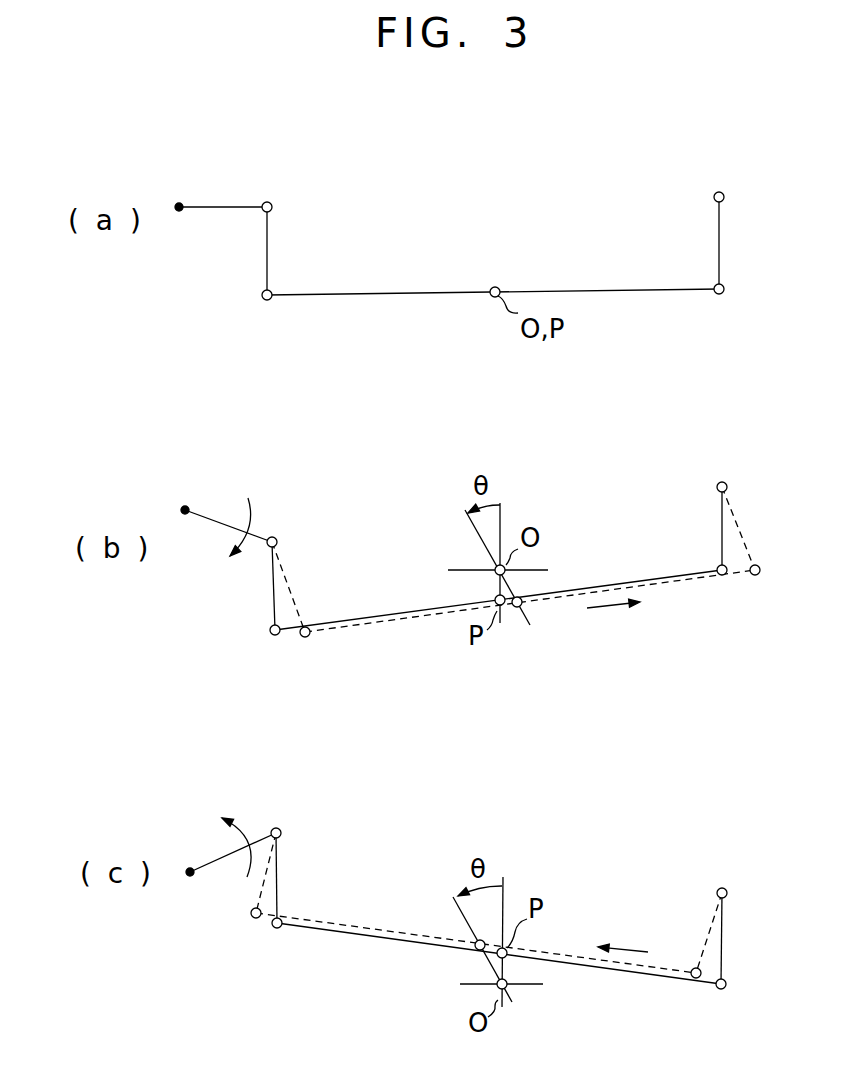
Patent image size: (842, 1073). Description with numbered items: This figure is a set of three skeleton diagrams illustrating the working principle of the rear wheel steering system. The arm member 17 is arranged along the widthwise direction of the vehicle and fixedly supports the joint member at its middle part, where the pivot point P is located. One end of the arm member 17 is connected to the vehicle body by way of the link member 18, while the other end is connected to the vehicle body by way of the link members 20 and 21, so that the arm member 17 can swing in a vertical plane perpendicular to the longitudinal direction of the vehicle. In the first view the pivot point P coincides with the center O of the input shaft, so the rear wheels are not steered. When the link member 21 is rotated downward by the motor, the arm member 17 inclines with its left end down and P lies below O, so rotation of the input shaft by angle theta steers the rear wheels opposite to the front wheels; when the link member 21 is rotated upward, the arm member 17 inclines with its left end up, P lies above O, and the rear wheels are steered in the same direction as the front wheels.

The arm member 17 is at (405, 295).
The link member 18 is at (722, 243).
The link member 20 is at (268, 268).
The link member 21 is at (236, 206).